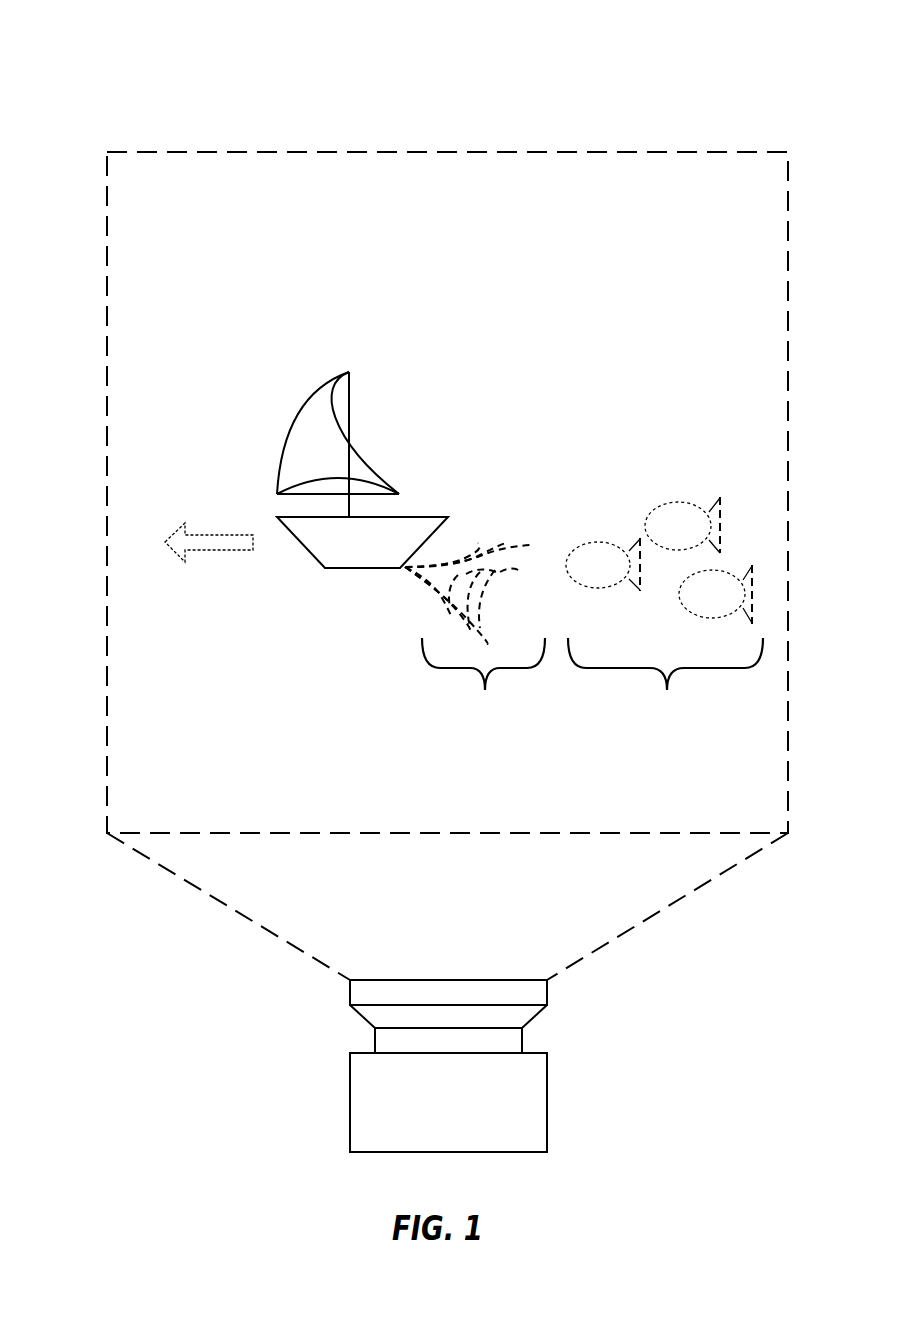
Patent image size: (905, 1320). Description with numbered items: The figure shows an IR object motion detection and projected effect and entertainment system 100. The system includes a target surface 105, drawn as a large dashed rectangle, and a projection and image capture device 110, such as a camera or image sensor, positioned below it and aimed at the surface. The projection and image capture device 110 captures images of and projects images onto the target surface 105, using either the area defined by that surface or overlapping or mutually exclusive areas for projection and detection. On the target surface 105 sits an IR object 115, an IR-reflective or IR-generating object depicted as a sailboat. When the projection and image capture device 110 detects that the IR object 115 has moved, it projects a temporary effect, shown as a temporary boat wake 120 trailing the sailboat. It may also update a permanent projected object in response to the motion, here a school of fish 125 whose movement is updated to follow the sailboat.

The IR object motion detection and projected effect and entertainment system 100 is at (718, 63).
The target surface 105 is at (131, 168).
The projection and image capture device 110 is at (360, 1127).
The IR object 115 is at (301, 437).
The temporary boat wake 120 is at (475, 633).
The school of fish 125 is at (664, 611).